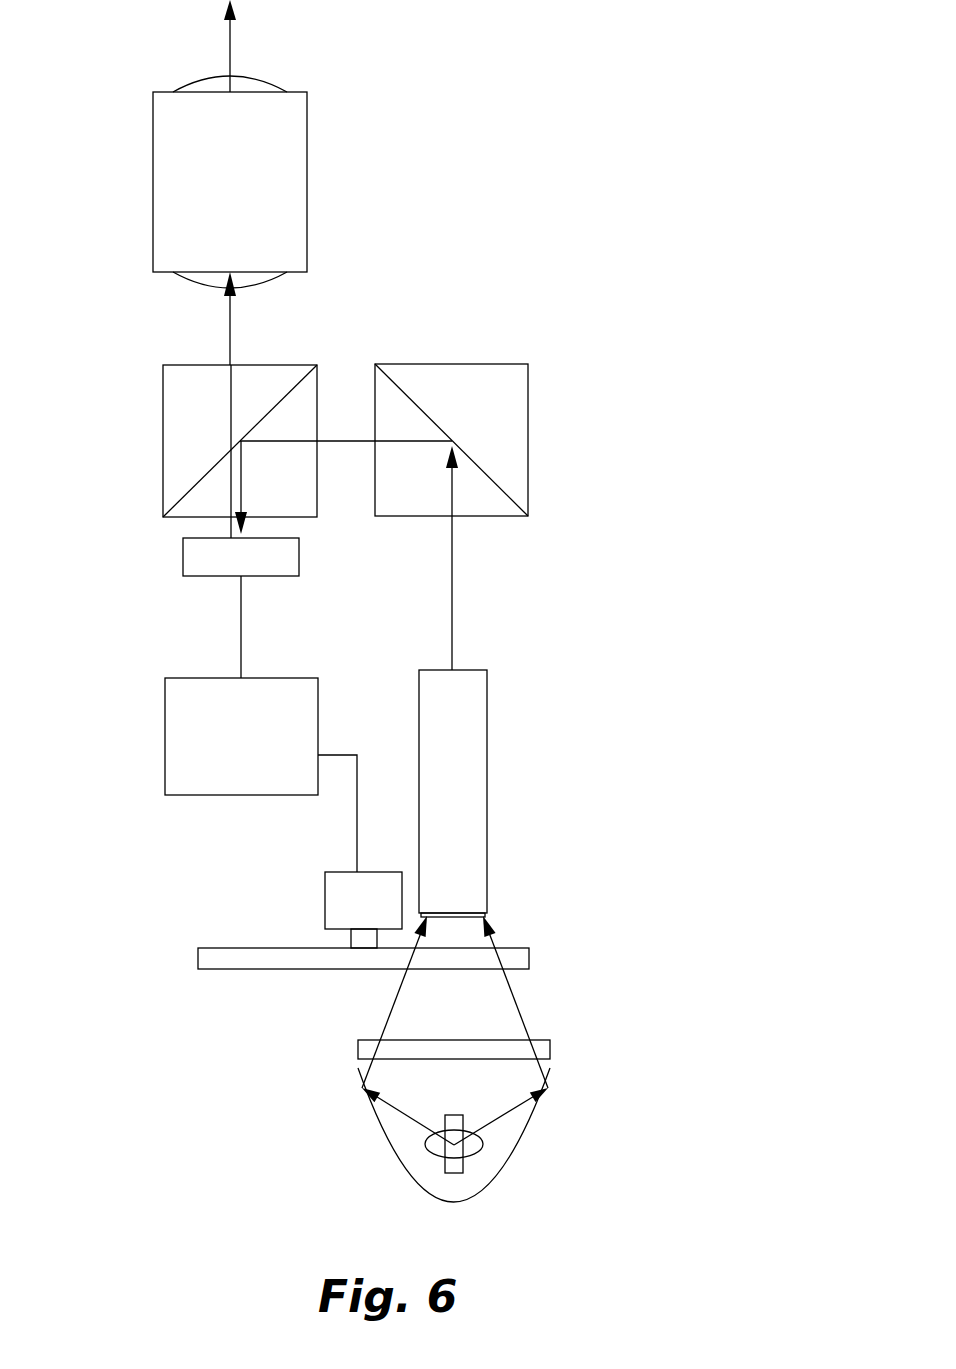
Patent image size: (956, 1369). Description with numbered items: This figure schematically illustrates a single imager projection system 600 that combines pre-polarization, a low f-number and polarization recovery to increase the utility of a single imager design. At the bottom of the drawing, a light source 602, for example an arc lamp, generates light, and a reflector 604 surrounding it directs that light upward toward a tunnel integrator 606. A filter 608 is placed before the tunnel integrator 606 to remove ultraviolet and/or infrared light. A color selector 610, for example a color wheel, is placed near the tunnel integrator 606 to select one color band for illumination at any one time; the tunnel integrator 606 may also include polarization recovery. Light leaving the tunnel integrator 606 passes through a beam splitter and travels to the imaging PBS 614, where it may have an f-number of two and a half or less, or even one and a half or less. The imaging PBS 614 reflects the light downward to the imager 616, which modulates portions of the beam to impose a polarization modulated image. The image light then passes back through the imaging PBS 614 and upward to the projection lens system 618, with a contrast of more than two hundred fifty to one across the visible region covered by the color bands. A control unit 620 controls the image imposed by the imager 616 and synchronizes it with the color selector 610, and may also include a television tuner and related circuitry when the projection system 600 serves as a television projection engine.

The projection system 600 is at (506, 132).
The light source 602 is at (455, 1158).
The reflector 604 is at (405, 1176).
The tunnel integrator 606 is at (489, 790).
The filter 608 is at (552, 1047).
The color selector 610 is at (325, 885).
The imaging PBS 614 is at (163, 433).
The imager 616 is at (197, 577).
The projection lens system 618 is at (307, 178).
The control unit 620 is at (165, 700).